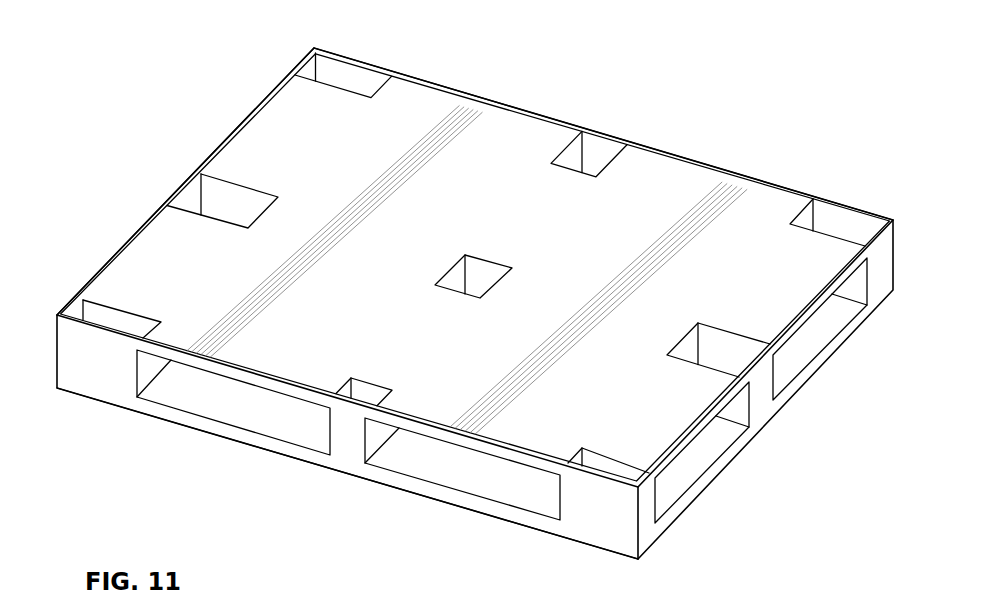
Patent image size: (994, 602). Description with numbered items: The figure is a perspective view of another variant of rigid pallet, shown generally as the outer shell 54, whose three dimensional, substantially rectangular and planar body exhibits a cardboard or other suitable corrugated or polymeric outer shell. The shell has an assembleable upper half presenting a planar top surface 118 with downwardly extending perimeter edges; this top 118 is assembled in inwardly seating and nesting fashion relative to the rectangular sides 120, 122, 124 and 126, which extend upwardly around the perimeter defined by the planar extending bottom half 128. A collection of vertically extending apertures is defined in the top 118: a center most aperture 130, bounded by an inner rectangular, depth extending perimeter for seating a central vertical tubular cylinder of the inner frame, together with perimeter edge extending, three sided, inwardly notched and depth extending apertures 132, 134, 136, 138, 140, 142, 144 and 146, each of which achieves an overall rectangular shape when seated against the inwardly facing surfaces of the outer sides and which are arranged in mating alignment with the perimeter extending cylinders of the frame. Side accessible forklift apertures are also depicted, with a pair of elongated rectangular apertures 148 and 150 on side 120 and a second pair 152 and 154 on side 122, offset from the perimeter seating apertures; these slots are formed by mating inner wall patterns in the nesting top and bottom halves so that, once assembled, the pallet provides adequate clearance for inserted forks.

The rigid pallet outer shell 54 is at (115, 193).
The planar top surface 118 is at (522, 136).
The side 120 is at (348, 460).
The side 122 is at (760, 413).
The side 124 is at (612, 129).
The side 126 is at (188, 200).
The planar extending bottom half 128 is at (588, 547).
The center most aperture 130 is at (455, 283).
The perimeter edge notched aperture 132 is at (610, 468).
The perimeter edge notched aperture 134 is at (733, 348).
The perimeter edge notched aperture 136 is at (845, 222).
The perimeter edge notched aperture 138 is at (107, 314).
The perimeter edge notched aperture 140 is at (231, 198).
The perimeter edge notched aperture 142 is at (347, 77).
The perimeter edge notched aperture 144 is at (598, 152).
The perimeter edge notched aperture 146 is at (363, 390).
The forklift aperture 148 is at (248, 412).
The forklift aperture 150 is at (487, 485).
The forklift aperture 152 is at (702, 453).
The forklift aperture 154 is at (808, 340).